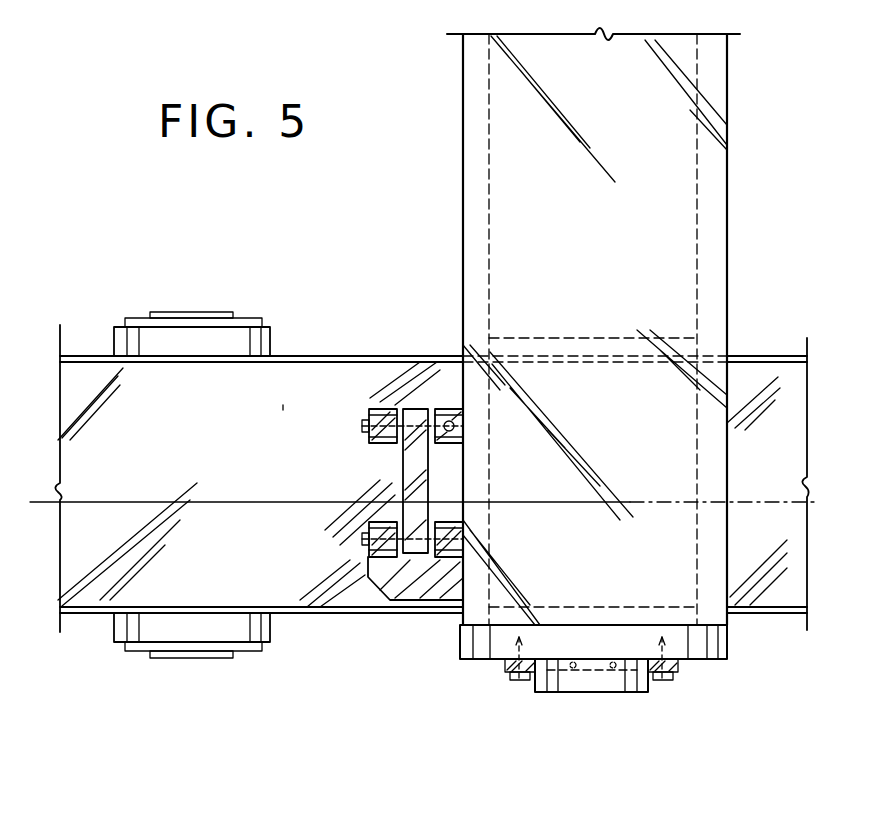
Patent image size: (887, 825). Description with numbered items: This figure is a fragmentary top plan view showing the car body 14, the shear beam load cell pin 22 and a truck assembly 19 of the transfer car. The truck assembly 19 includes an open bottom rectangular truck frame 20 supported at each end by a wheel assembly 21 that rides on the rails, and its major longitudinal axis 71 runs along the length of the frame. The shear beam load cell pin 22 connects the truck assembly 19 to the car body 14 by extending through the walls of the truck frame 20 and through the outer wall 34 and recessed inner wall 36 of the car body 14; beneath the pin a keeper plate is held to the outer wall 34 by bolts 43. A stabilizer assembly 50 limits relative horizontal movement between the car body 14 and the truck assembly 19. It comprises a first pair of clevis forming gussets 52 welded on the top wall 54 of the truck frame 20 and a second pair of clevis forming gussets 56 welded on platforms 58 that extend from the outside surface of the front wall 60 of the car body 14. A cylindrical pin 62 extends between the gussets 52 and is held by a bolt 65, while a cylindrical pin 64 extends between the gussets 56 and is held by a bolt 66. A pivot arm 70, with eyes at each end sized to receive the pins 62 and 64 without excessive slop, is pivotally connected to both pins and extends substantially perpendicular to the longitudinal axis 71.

The car body 14 is at (740, 248).
The front wall 60 is at (463, 238).
The recessed inner wall 36 is at (570, 345).
The outer wall 34 is at (625, 651).
The bolts 43 is at (660, 680).
The shear beam load cell pin 22 is at (602, 692).
The major longitudinal axis 71 is at (283, 500).
The top wall 54 is at (283, 405).
The truck assembly 19 is at (388, 350).
The wheel assembly 21 is at (262, 318).
The truck frame 20 is at (358, 616).
The stabilizer assembly 50 is at (430, 510).
The pivot arm 70 is at (430, 478).
The cylindrical pin 62 is at (362, 427).
The bolt 65 is at (458, 427).
The clevis forming gussets 52 is at (450, 410).
The cylindrical pin 64 is at (362, 540).
The bolt 66 is at (455, 512).
The clevis forming gussets 56 is at (388, 522).
The platforms 58 is at (425, 583).